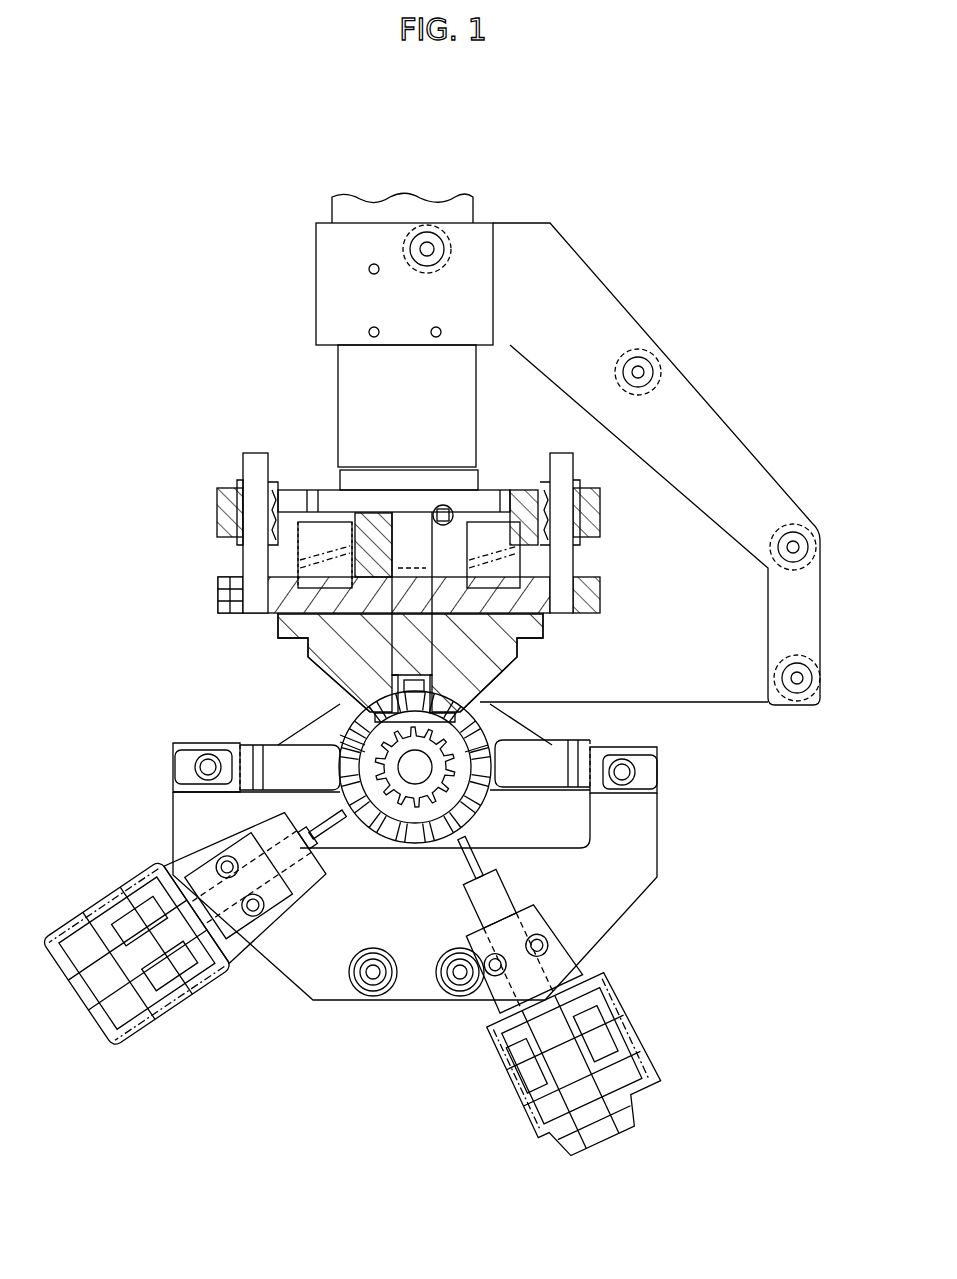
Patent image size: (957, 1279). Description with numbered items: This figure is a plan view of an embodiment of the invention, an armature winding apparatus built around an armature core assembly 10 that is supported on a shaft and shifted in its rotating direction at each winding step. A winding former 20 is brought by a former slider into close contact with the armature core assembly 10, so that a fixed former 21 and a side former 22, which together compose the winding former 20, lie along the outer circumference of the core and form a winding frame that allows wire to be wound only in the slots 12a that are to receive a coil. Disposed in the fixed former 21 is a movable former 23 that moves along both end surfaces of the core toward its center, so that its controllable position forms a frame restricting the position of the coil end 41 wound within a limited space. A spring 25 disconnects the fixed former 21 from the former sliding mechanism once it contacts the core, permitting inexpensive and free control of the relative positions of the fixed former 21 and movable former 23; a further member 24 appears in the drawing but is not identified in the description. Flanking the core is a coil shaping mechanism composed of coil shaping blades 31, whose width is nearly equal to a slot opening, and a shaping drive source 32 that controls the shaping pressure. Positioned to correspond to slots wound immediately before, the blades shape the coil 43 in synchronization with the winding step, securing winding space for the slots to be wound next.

The armature core assembly 10 is at (470, 830).
The slots 12a is at (338, 705).
The winding former 20 is at (600, 488).
The fixed former 21 is at (277, 632).
The side former 22 is at (487, 787).
The movable former 23 is at (400, 510).
The support bracket 24 is at (638, 322).
The spring 25 is at (323, 542).
The coil shaping blades 31 is at (332, 842).
The shaping drive source 32 is at (183, 1007).
The coil end 41 is at (511, 730).
The coil 43 is at (363, 850).